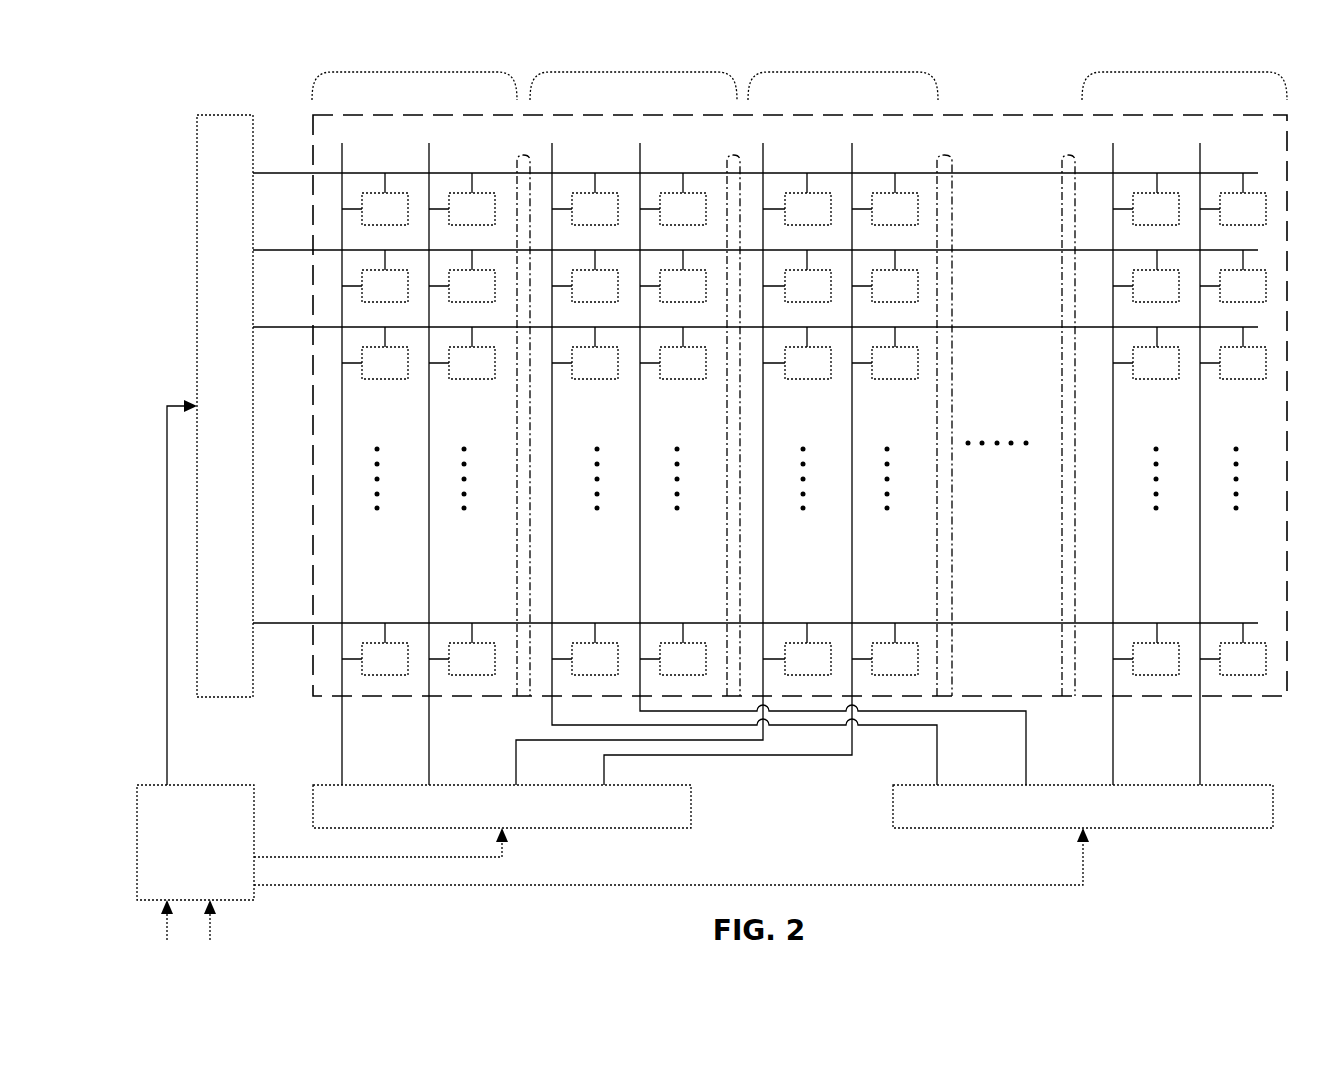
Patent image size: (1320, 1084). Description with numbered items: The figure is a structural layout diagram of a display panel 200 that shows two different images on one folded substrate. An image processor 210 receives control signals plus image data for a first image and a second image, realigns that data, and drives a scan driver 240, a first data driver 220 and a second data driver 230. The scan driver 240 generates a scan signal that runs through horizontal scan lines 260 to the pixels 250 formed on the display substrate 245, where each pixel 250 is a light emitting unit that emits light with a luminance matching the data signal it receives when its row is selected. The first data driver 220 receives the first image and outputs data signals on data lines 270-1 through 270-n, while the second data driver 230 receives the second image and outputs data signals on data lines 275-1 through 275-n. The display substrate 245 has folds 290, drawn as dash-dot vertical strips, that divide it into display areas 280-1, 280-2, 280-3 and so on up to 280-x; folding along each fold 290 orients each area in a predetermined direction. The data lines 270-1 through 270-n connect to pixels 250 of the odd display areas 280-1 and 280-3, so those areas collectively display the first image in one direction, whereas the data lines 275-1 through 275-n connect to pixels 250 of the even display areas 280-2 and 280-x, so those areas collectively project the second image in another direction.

The display panel 200 is at (160, 127).
The image processor 210 is at (639, 682).
The first data driver 220 is at (502, 806).
The second data driver 230 is at (1083, 806).
The scan driver 240 is at (225, 406).
The display substrate 245 is at (310, 685).
The pixel 250 is at (804, 424).
The scan line 260 is at (980, 172).
The first data line of first data driver 270-1 is at (342, 730).
The nth data line of first data driver 270-n is at (720, 755).
The first data line of second data driver 275-1 is at (937, 742).
The nth data line of second data driver 275-n is at (1200, 742).
The first display area 280-1 is at (414, 413).
The second display area 280-2 is at (778, 413).
The third display area 280-3 is at (727, 418).
The xth display area 280-x is at (1184, 413).
The fold 290 is at (795, 412).